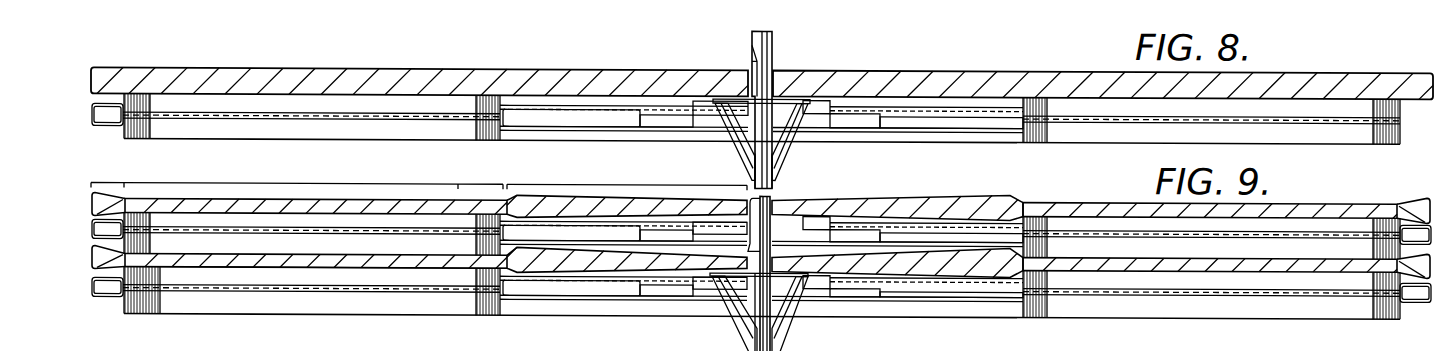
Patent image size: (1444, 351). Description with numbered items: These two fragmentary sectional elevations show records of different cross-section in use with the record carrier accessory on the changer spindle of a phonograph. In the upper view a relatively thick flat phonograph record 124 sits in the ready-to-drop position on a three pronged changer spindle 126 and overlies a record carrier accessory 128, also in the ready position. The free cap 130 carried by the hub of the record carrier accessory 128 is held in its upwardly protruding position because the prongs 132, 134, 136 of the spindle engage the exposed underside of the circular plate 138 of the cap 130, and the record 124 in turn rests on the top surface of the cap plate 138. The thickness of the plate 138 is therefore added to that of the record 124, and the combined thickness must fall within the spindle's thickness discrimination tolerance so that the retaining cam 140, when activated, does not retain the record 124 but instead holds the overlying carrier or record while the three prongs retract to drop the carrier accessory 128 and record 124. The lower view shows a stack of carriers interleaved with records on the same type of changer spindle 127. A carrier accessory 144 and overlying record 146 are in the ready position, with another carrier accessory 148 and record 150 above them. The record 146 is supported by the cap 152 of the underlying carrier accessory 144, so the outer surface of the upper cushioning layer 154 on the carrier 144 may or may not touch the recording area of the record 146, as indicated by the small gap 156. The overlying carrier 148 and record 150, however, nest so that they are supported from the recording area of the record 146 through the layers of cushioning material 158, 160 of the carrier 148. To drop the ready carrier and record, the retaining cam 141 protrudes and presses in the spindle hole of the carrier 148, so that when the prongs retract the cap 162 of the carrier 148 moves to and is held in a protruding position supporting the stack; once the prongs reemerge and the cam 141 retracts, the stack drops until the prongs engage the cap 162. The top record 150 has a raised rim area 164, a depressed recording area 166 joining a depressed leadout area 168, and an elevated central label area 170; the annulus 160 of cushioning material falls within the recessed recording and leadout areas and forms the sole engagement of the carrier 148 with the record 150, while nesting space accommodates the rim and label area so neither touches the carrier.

In FIG. 8, the phonograph record 124 is at (145, 65).
In FIG. 8, the three pronged changer spindle 126 is at (776, 28).
In FIG. 8, the record carrier accessory 128 is at (91, 112).
In FIG. 8, the free cap 130 is at (823, 92).
In FIG. 8, the prong of changer spindle 132 is at (745, 145).
In FIG. 8, the prong of changer spindle 134 is at (763, 160).
In FIG. 8, the prong of changer spindle 136 is at (783, 144).
In FIG. 8, the circular plate of cap 138 is at (790, 95).
In FIG. 8, the retaining cam 140 is at (755, 52).
In FIG. 9, the changer spindle 127 is at (772, 191).
In FIG. 9, the retaining cam 141 is at (748, 227).
In FIG. 9, the carrier accessory 144 is at (91, 287).
In FIG. 9, the record 146 is at (91, 258).
In FIG. 9, the overlying carrier accessory 148 is at (91, 230).
In FIG. 9, the record 150 is at (91, 205).
In FIG. 9, the cap 152 is at (705, 274).
In FIG. 9, the upper cushioning layer 154 is at (606, 284).
In FIG. 9, the gap 156 is at (318, 264).
In FIG. 9, the layer of cushioning material 158 is at (676, 242).
In FIG. 9, the annulus of cushioning material 160 is at (681, 222).
In FIG. 9, the cap of overlying carrier 162 is at (817, 211).
In FIG. 9, the raised rim area 164 is at (109, 172).
In FIG. 9, the depressed recording area 166 is at (291, 173).
In FIG. 9, the depressed leadout area 168 is at (481, 173).
In FIG. 9, the elevated central label area 170 is at (627, 173).